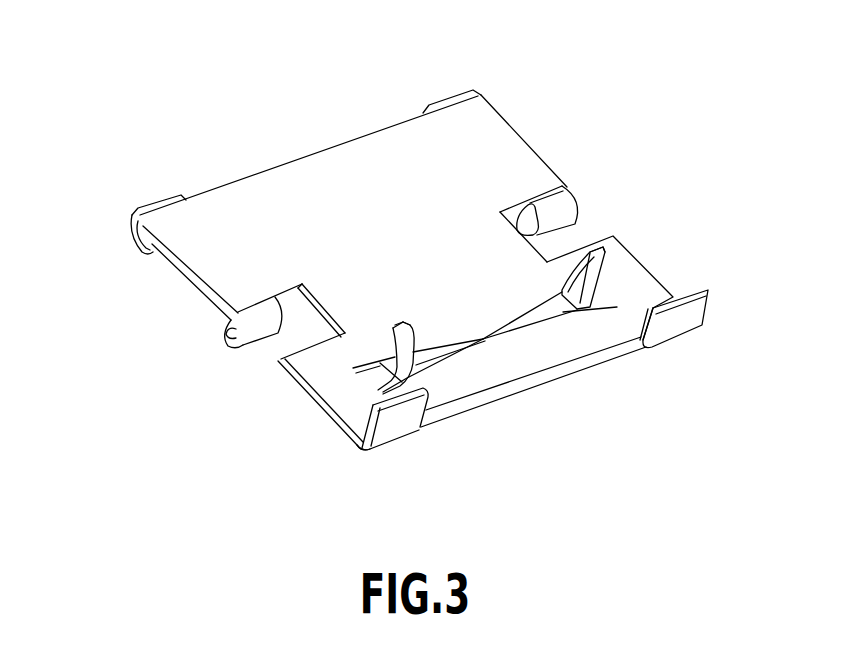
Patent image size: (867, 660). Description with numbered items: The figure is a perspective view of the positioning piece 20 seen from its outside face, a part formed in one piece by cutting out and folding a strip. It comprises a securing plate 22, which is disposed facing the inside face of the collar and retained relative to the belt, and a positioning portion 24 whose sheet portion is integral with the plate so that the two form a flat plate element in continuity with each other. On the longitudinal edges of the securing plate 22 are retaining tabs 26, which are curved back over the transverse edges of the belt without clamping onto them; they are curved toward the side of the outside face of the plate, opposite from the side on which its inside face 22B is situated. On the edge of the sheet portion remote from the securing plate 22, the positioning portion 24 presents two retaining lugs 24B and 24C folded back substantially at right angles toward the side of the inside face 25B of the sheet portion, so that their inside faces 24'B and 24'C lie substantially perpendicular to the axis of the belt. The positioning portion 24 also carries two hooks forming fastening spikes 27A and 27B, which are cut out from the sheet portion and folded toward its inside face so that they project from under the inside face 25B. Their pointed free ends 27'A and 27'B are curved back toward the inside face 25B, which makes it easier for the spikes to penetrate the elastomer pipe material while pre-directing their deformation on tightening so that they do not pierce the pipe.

The positioning piece 20 is at (573, 133).
The securing plate 22 is at (266, 169).
The inside face of the securing plate 22B is at (367, 169).
The retaining tabs 26 is at (437, 103).
The positioning portion 24 is at (513, 342).
The retaining lug 24B is at (400, 427).
The inside face of retaining lug 24'B is at (321, 424).
The retaining lug 24C is at (678, 327).
The inside face of retaining lug 24'C is at (701, 293).
The inside face of the sheet portion 25B is at (512, 367).
The fastening spike 27A is at (413, 350).
The pointed free end of fastening spike 27'A is at (377, 302).
The fastening spike 27B is at (568, 286).
The pointed free end of fastening spike 27'B is at (613, 222).